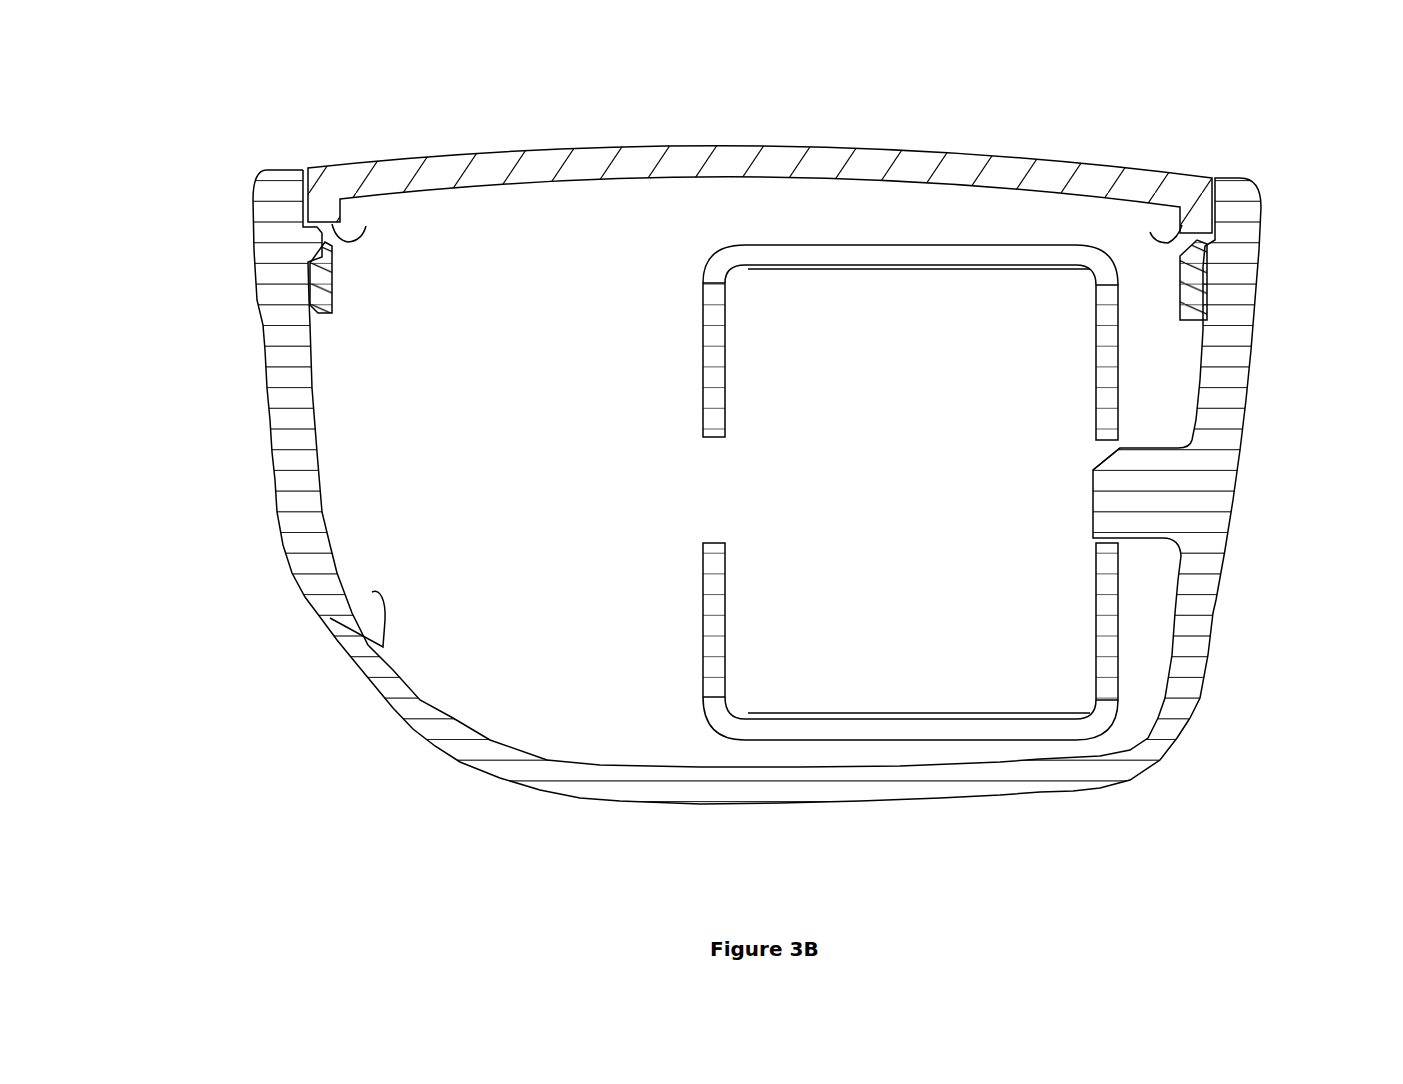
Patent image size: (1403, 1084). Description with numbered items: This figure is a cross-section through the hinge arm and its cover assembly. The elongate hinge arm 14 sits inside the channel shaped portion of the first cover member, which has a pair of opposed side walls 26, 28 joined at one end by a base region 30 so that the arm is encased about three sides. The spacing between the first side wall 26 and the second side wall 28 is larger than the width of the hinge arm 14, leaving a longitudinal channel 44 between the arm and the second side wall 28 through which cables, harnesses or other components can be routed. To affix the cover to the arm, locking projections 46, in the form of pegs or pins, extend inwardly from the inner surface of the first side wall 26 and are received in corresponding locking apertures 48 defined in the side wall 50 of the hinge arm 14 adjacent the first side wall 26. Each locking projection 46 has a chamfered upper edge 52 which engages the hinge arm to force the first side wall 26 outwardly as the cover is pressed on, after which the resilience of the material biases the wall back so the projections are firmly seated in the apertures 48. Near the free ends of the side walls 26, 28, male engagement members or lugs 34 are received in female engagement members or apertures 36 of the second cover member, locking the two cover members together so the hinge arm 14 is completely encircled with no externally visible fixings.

The hinge arm 14 is at (910, 390).
The first side wall 26 is at (1233, 318).
The second side wall 28 is at (293, 400).
The base region 30 is at (930, 789).
The male engagement member 34 is at (337, 253).
The female engagement member 36 is at (366, 226).
The longitudinal channel 44 is at (372, 592).
The locking projection 46 is at (1135, 497).
The locking aperture 48 is at (1098, 542).
The side wall of the hinge arm 50 is at (1100, 378).
The chamfered upper edge 52 is at (1100, 455).